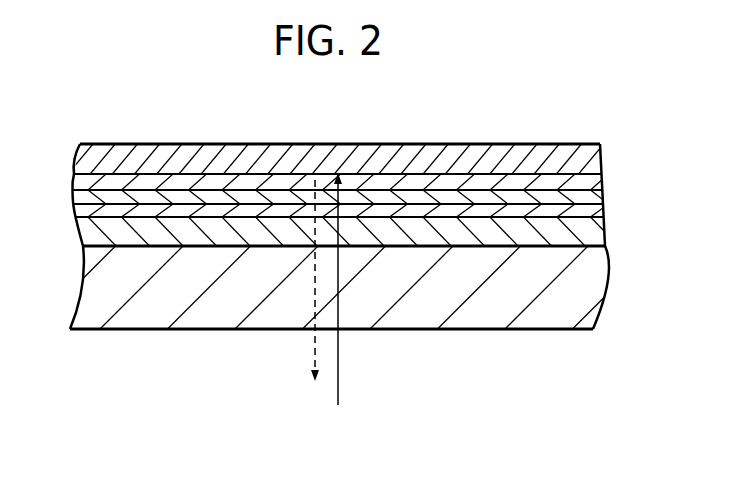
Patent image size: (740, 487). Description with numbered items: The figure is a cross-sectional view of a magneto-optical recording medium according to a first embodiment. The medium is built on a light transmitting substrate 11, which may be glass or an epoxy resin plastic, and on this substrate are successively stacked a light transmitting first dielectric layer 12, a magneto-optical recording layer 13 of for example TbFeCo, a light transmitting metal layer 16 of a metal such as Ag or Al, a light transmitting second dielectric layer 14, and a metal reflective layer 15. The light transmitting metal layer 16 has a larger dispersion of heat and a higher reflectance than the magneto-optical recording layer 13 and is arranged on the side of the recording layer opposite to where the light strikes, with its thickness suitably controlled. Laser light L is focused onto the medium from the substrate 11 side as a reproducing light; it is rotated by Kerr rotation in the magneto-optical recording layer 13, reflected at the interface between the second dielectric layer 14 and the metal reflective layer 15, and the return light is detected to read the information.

The substrate 11 is at (585, 288).
The first dielectric layer 12 is at (590, 235).
The magneto-optical recording layer 13 is at (582, 210).
The second dielectric layer 14 is at (598, 177).
The metal reflective layer 15 is at (603, 157).
The light transmitting metal layer 16 is at (583, 200).
The light L is at (338, 353).